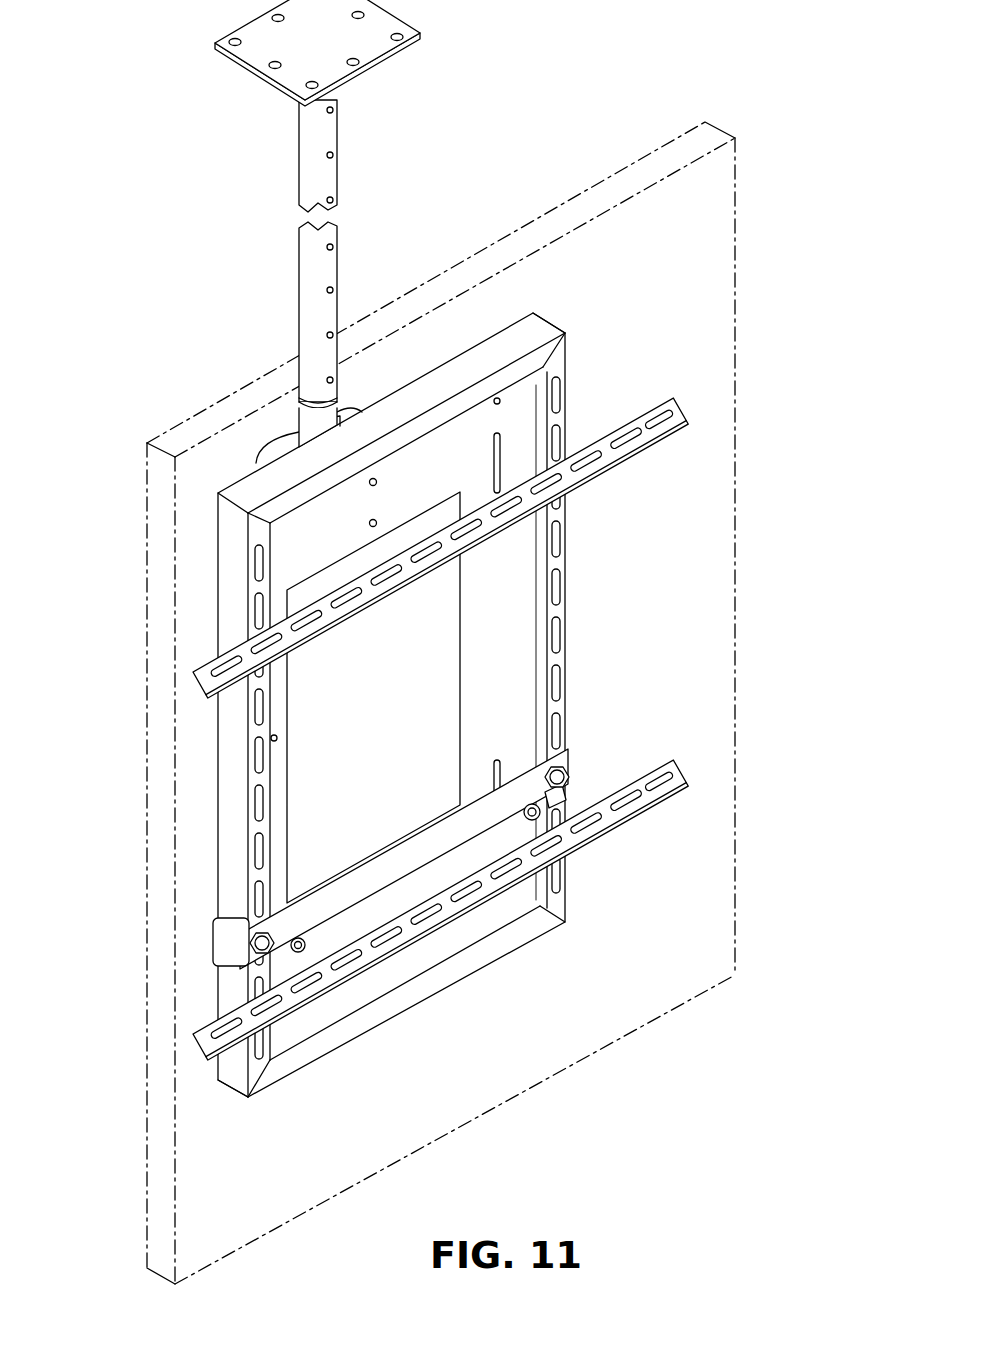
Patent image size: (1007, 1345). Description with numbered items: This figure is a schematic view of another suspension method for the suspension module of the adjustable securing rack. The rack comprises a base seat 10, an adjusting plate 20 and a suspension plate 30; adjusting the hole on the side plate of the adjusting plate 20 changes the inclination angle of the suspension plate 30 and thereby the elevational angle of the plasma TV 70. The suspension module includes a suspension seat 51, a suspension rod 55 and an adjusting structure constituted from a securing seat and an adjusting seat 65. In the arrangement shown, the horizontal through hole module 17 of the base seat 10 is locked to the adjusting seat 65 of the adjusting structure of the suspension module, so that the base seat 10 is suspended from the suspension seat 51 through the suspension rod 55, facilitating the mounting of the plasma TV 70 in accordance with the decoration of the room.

The base seat 10 is at (594, 640).
The through hole group 17 is at (372, 486).
The adjusting plate 20 is at (228, 946).
The suspension plate 30 is at (675, 418).
The suspension seat 51 is at (392, 20).
The suspension rod 55 is at (302, 268).
The adjusting seat 65 is at (258, 462).
The plasma TV 70 is at (737, 254).